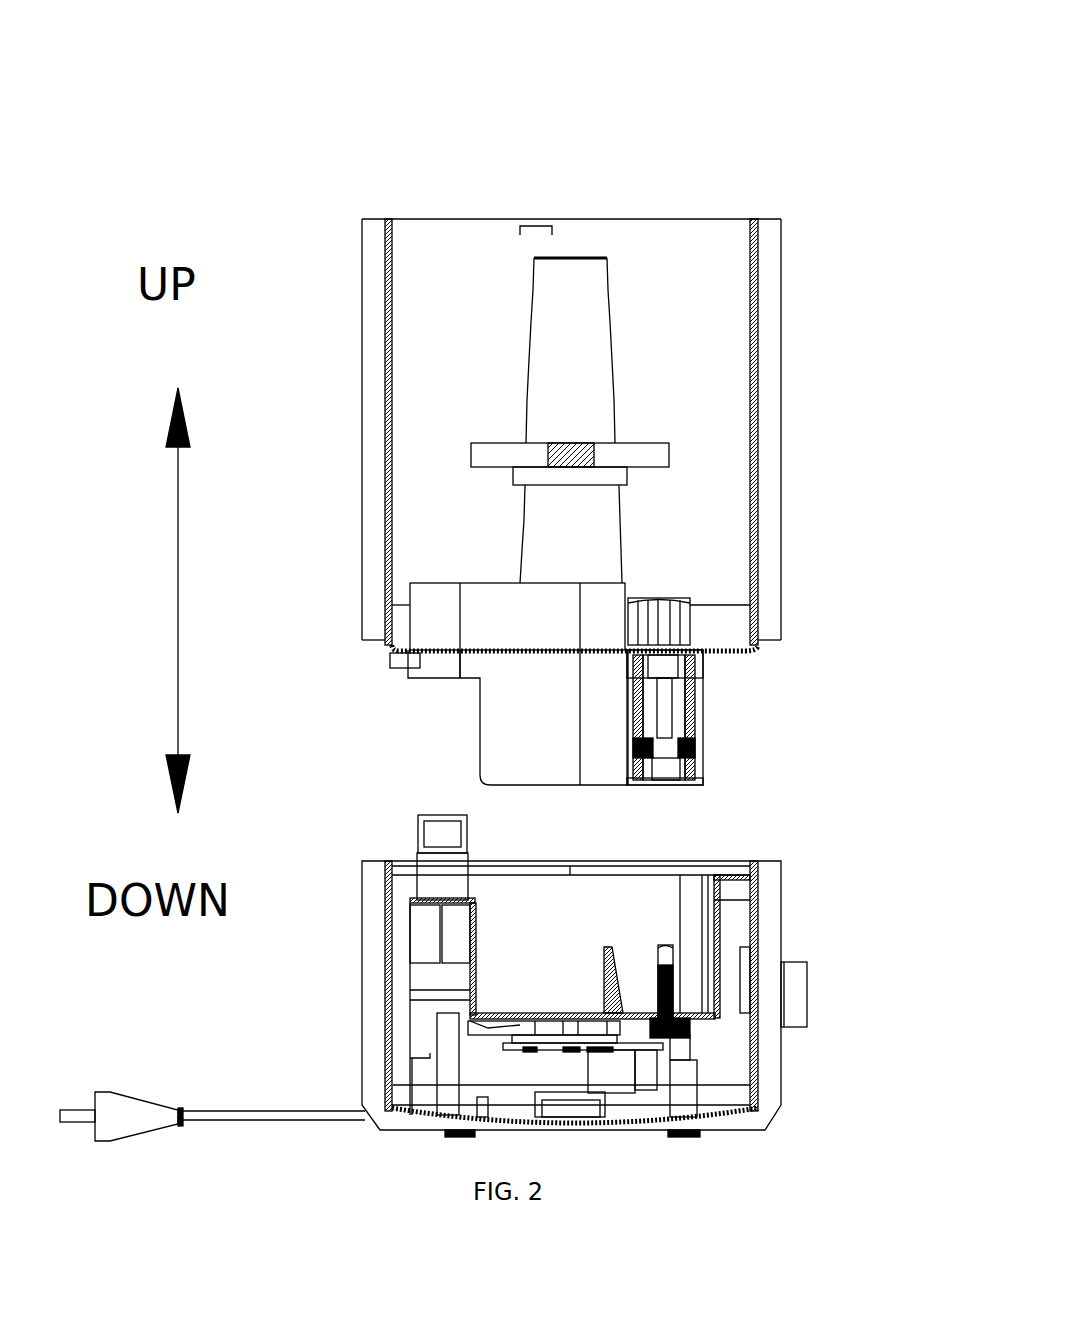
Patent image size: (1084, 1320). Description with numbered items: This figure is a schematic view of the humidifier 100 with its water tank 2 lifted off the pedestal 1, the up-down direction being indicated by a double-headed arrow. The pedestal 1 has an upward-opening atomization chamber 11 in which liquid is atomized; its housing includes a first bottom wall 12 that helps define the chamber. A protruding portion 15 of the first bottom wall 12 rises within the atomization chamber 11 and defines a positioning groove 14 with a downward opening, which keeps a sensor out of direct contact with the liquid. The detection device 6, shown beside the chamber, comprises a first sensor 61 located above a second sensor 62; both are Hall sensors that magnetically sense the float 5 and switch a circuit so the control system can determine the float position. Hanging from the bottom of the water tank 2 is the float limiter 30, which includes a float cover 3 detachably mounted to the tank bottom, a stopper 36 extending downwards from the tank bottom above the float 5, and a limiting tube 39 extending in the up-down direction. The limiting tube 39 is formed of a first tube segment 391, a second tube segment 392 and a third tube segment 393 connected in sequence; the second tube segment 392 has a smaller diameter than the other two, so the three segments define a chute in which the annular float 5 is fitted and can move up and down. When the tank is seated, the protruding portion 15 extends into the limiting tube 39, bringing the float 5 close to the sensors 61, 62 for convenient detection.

The humidifier 100 is at (603, 585).
The water tank 2 is at (766, 492).
The float limiter 30 is at (830, 653).
The stopper 36 is at (690, 685).
The float cover 3 is at (700, 725).
The limiting tube 39 is at (675, 717).
The float 5 is at (710, 808).
The first tube segment 391 is at (648, 663).
The second tube segment 392 is at (653, 700).
The third tube segment 393 is at (647, 775).
The pedestal 1 is at (375, 960).
The atomization chamber 11 is at (568, 980).
The protruding portion 15 is at (670, 945).
The positioning groove 14 is at (673, 950).
The switch assembly 6 is at (885, 945).
The first sensor 61 is at (675, 970).
The second sensor 62 is at (697, 1002).
The first bottom wall 12 is at (697, 1023).